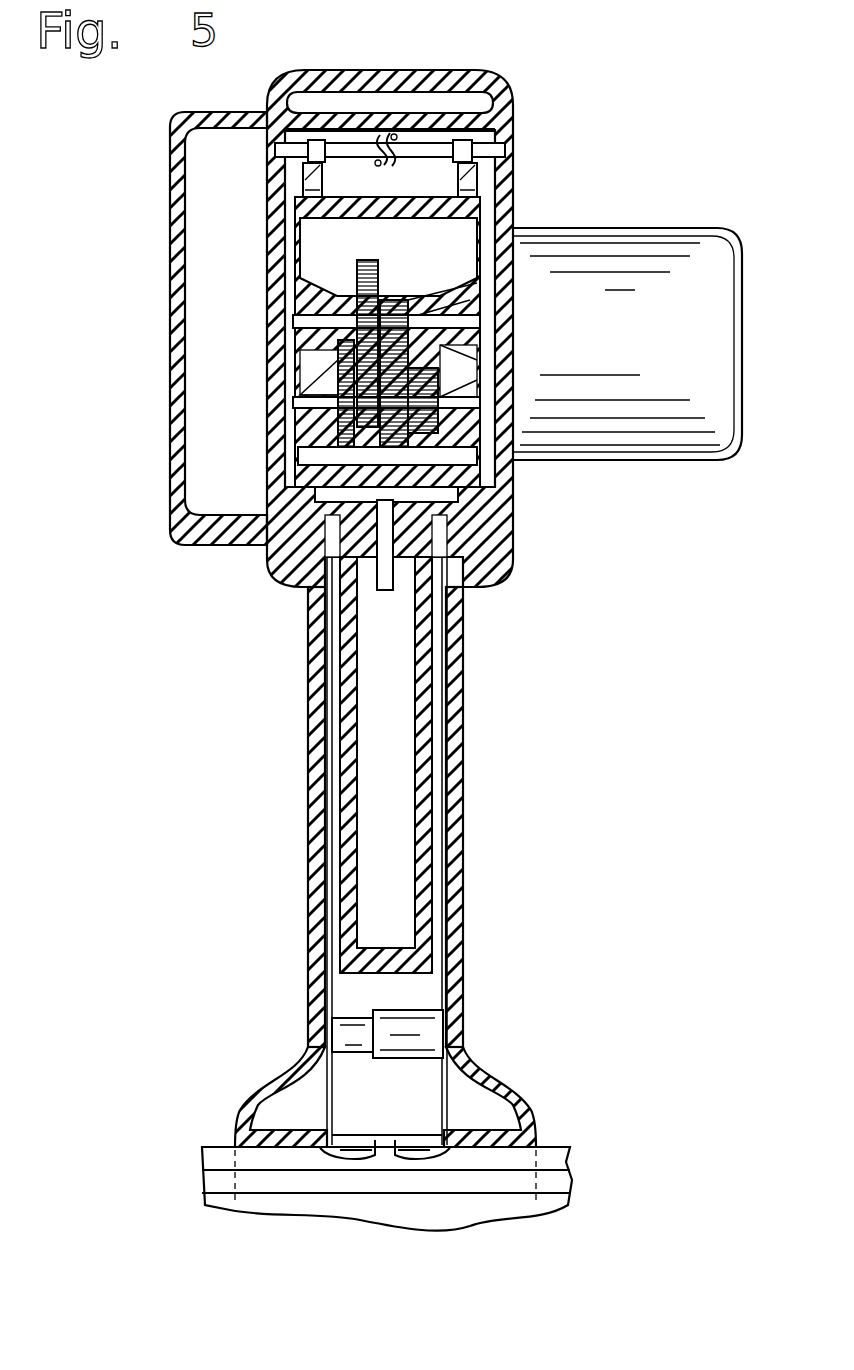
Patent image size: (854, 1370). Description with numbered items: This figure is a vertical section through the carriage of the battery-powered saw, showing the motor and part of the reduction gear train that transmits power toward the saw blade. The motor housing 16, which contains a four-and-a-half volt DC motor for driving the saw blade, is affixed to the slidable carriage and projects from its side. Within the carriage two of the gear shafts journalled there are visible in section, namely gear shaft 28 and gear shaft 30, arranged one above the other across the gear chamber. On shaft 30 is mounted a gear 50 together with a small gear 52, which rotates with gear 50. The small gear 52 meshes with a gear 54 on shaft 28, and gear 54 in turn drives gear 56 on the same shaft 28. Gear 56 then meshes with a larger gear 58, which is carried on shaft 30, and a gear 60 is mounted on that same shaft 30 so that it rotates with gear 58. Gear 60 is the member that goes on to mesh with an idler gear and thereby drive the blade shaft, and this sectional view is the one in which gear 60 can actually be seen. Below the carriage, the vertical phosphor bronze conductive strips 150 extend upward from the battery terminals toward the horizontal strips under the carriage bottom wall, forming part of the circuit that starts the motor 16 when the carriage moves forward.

The motor housing 16 is at (690, 321).
The gear shaft 28 is at (292, 309).
The gear shaft 30 is at (305, 395).
The gear 50 is at (337, 408).
The small gear 52 is at (340, 448).
The gear 54 is at (369, 262).
The gear 56 is at (394, 300).
The larger gear 58 is at (507, 338).
The gear 60 is at (503, 375).
The vertical conductive strips 150 is at (330, 782).